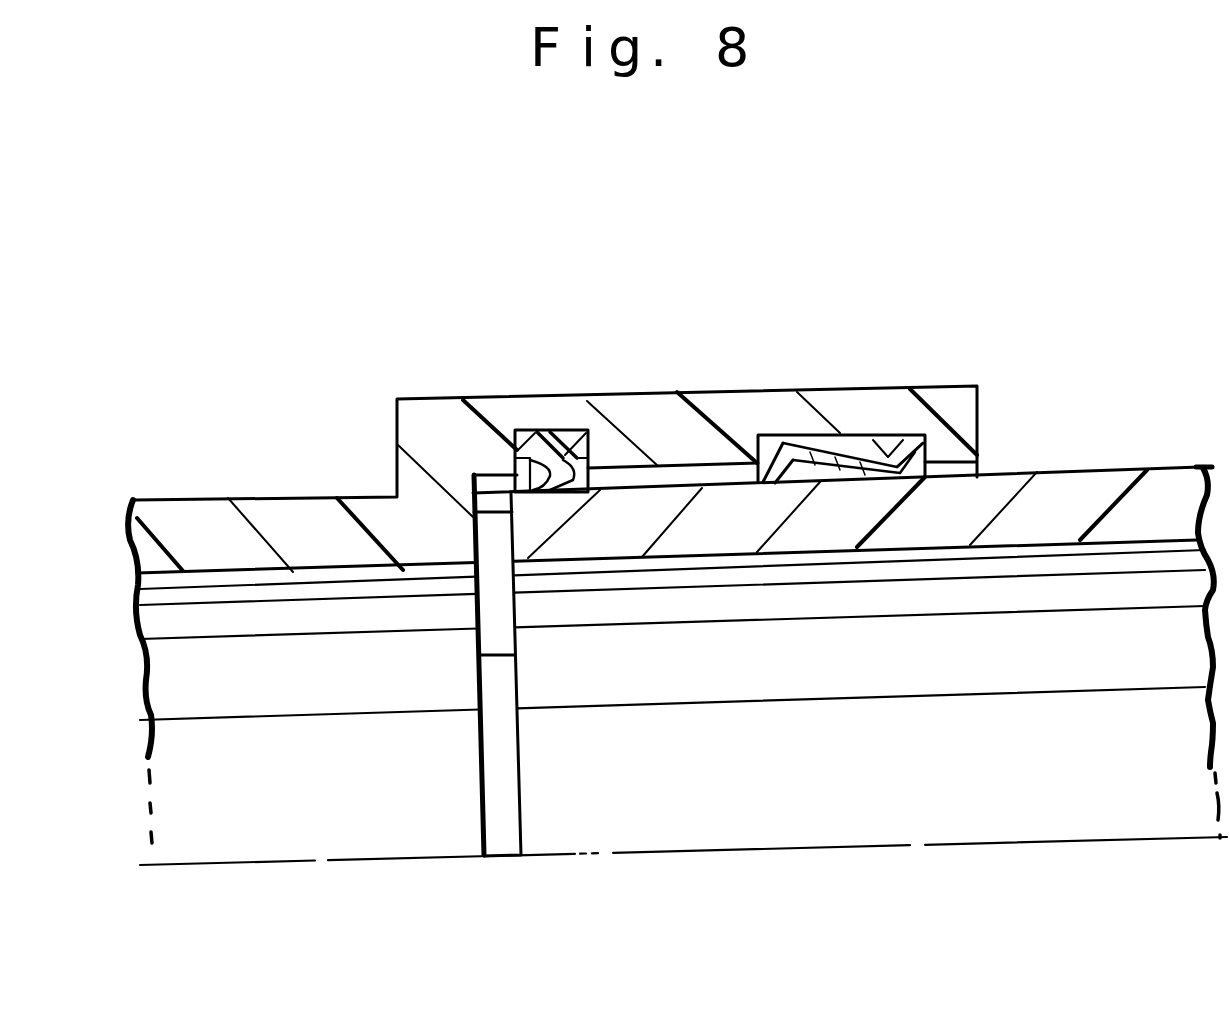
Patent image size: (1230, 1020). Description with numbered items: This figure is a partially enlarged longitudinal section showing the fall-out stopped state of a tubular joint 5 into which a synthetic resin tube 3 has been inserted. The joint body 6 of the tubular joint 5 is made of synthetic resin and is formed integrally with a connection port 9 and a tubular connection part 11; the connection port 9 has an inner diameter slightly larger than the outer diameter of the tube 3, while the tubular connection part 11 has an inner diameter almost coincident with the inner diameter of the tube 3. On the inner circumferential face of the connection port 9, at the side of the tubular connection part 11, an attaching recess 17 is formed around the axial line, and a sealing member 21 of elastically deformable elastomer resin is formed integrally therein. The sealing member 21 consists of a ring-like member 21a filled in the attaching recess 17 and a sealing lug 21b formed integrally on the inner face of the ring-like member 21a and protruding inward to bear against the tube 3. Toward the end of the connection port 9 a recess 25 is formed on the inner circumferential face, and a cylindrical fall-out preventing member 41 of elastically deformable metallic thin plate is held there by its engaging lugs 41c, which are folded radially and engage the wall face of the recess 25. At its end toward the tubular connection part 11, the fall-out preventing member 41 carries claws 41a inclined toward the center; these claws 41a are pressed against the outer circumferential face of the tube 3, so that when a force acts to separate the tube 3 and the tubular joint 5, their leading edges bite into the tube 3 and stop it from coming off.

The synthetic resin tube 3 is at (1133, 468).
The tubular joint 5 is at (556, 426).
The joint body 6 is at (556, 430).
The connection port 9 is at (688, 427).
The tubular connection part 11 is at (222, 525).
The attaching recess 17 is at (530, 447).
The sealing member 21 is at (578, 523).
The ring-like member 21a is at (583, 430).
The sealing lug 21b is at (560, 487).
The recess 25 is at (897, 453).
The fall-out preventing member 41 is at (944, 525).
The claw 41a is at (790, 482).
The engaging lug 41c is at (945, 463).